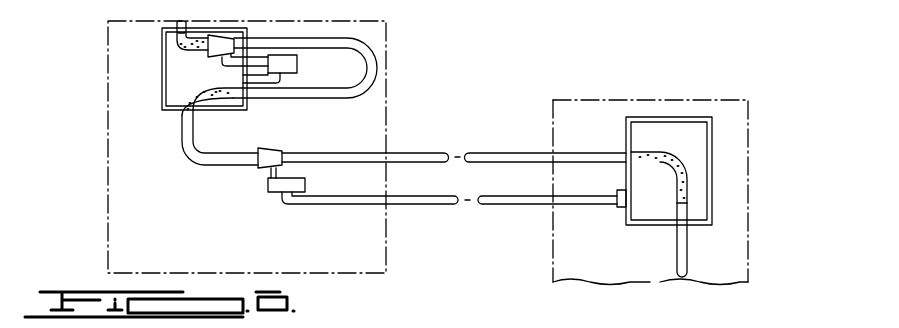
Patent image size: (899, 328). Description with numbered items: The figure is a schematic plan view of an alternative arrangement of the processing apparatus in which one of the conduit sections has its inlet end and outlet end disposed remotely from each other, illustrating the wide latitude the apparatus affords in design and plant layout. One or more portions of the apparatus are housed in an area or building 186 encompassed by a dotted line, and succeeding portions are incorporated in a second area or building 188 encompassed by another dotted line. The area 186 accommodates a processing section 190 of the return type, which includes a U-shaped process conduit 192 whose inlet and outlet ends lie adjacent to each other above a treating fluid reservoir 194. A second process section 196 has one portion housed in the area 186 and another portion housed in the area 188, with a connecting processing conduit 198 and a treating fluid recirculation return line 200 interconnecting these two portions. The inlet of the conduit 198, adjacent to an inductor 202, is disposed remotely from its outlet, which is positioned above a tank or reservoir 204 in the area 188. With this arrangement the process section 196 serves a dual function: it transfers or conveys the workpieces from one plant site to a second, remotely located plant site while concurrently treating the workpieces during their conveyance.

The area or building 186 is at (386, 77).
The second area or building 188 is at (593, 100).
The processing section 190 is at (380, 50).
The U-shaped process conduit 192 is at (297, 97).
The treating fluid reservoir 194 is at (162, 74).
The second process section 196 is at (367, 153).
The connecting processing conduit 198 is at (492, 153).
The treating fluid recirculation return line 200 is at (443, 205).
The inductor 202 is at (258, 168).
The tank or reservoir 204 is at (712, 212).